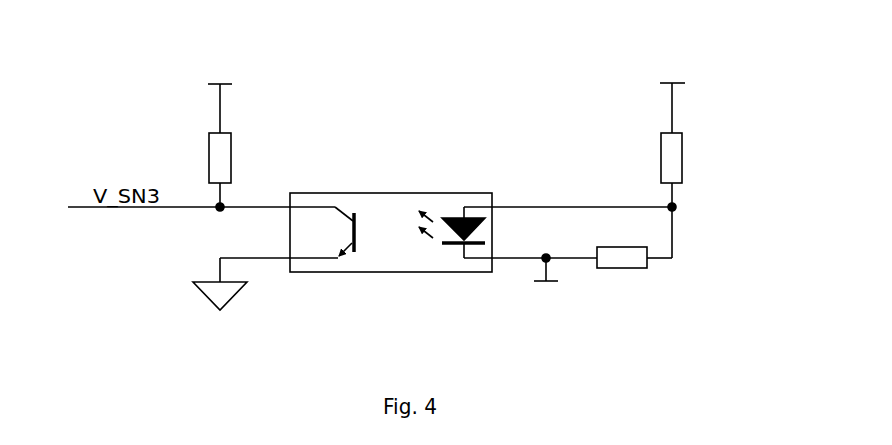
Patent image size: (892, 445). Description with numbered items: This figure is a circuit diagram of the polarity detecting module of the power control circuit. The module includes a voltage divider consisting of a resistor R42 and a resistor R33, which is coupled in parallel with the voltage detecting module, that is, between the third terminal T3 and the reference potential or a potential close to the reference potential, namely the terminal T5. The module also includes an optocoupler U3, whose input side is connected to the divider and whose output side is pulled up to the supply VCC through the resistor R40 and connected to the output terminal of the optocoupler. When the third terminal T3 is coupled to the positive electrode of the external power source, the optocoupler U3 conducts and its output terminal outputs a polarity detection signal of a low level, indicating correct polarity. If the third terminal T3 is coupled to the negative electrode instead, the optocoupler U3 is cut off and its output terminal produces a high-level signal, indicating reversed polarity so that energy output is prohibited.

The pull-up resistor 100K R40 is at (245, 170).
The resistor R42 is at (694, 158).
The resistor R33 is at (622, 258).
The optocoupler U3 is at (391, 258).
The third terminal T3 is at (666, 87).
The terminal T5 is at (551, 291).
The supply voltage VCC is at (219, 96).